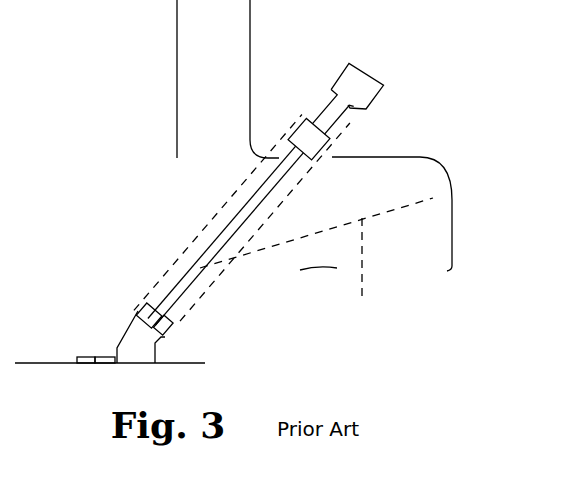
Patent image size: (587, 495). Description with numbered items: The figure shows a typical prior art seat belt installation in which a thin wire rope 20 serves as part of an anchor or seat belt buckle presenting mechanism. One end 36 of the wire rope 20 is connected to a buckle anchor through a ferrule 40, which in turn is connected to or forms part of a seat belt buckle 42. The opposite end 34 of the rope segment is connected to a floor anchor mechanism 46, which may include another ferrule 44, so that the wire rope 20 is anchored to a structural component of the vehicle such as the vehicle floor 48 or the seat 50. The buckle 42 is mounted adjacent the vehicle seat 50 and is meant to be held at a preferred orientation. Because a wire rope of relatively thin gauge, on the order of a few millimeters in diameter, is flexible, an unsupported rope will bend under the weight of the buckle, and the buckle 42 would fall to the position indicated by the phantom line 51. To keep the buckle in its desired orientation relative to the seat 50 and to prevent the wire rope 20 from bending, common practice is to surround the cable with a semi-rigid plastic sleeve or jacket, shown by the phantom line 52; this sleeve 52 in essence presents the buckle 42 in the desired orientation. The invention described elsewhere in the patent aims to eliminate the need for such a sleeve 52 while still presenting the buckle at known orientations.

The wire rope 20 is at (190, 250).
The opposite end 34 is at (150, 311).
The end 36 is at (299, 150).
The ferrule 40 is at (302, 131).
The seat belt buckle 42 is at (357, 87).
The ferrule 44 is at (165, 337).
The floor anchor mechanism 46 is at (106, 323).
The vehicle floor 48 is at (42, 365).
The vehicle seat 50 is at (385, 156).
The phantom line 51 is at (316, 261).
The plastic sleeve 52 is at (221, 208).